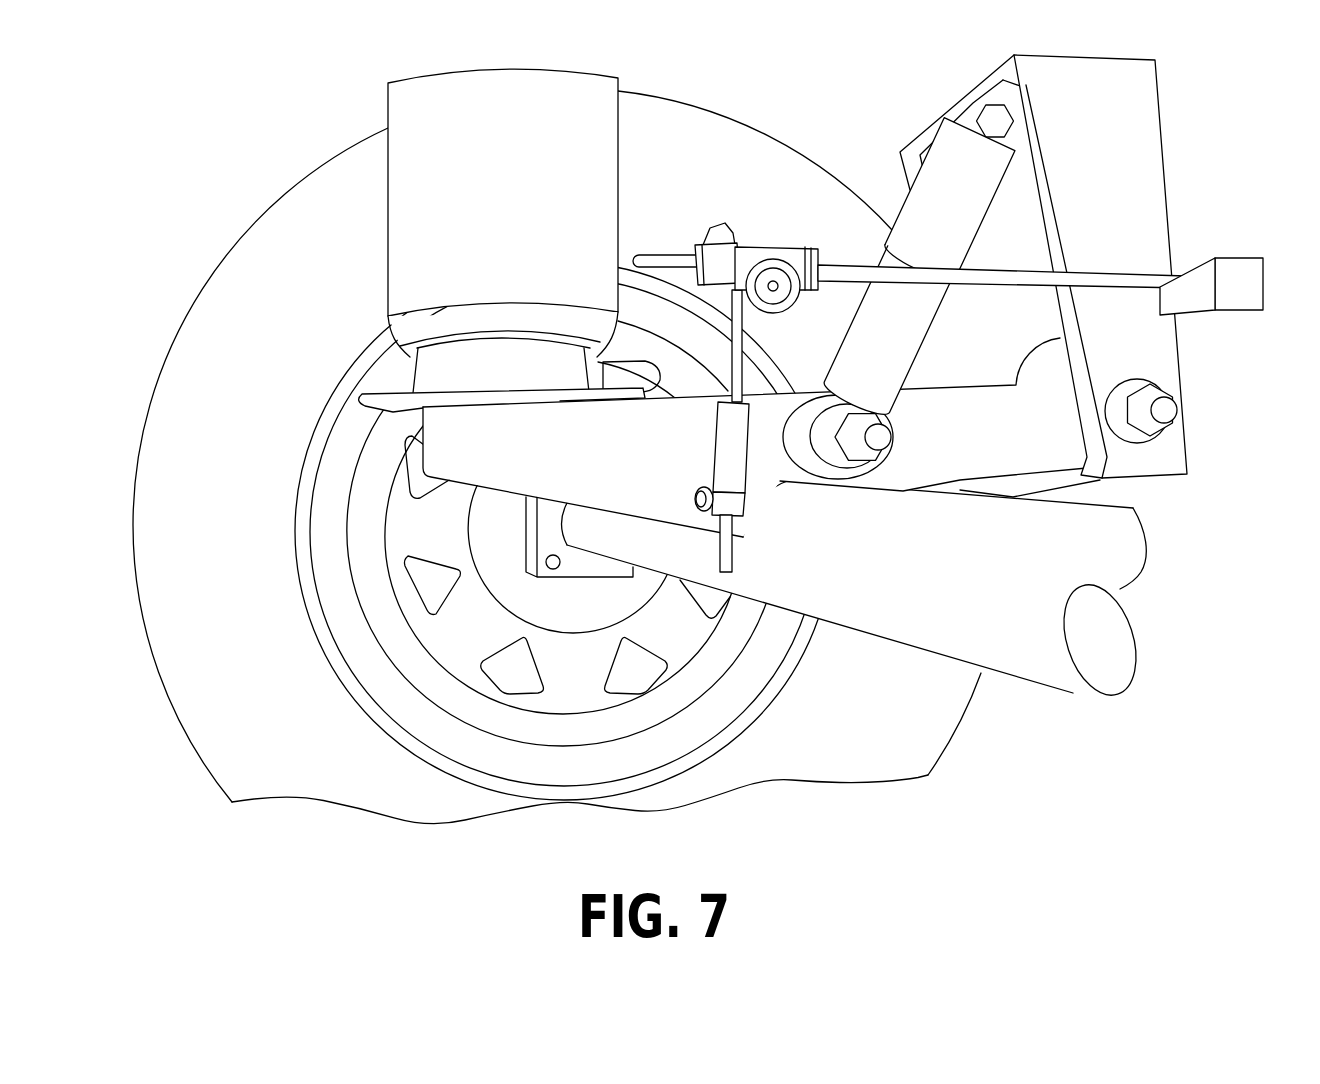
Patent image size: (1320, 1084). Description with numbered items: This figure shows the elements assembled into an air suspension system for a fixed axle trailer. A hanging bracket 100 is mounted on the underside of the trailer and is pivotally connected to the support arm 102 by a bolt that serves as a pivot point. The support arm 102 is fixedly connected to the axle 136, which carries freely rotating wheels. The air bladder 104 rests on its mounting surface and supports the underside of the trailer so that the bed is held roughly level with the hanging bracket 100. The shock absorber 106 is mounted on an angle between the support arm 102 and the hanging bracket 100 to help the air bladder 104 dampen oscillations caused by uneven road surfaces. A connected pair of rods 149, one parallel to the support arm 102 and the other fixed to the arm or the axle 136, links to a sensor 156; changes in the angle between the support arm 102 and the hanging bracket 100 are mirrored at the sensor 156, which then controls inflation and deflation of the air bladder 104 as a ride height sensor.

The hanging bracket 100 is at (1132, 172).
The support arm 102 is at (1000, 439).
The air bladder 104 is at (505, 199).
The shock absorber 106 is at (972, 225).
The axle 136 is at (1057, 567).
The pair of rods 149 is at (791, 196).
The sensor 156 is at (1235, 278).